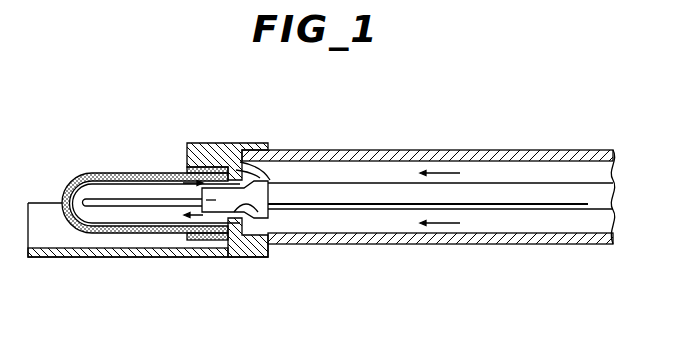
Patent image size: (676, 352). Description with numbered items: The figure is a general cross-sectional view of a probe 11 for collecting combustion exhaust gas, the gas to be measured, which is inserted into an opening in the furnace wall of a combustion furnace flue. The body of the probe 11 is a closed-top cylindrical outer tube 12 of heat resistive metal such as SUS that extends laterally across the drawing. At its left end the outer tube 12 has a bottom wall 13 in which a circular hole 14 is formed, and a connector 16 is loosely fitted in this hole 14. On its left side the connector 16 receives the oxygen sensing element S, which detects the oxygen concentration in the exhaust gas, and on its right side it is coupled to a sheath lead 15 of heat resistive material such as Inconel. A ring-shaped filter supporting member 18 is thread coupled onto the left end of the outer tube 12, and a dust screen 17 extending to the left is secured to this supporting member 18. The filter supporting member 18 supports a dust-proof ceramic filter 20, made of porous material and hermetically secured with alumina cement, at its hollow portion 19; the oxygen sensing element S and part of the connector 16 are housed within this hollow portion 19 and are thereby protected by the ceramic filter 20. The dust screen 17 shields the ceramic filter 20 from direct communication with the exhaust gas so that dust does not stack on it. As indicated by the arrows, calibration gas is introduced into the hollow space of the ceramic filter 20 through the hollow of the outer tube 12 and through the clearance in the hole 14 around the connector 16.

The probe 11 is at (432, 140).
The outer tube 12 is at (472, 245).
The bottom wall 13 is at (268, 160).
The circular hole 14 is at (236, 210).
The sheath lead 15 is at (518, 183).
The connector 16 is at (270, 196).
The dust screen 17 is at (75, 258).
The filter supporting member 18 is at (213, 144).
The hollow portion 19 is at (173, 190).
The ceramic filter 20 is at (100, 173).
The oxygen sensing element S is at (140, 206).